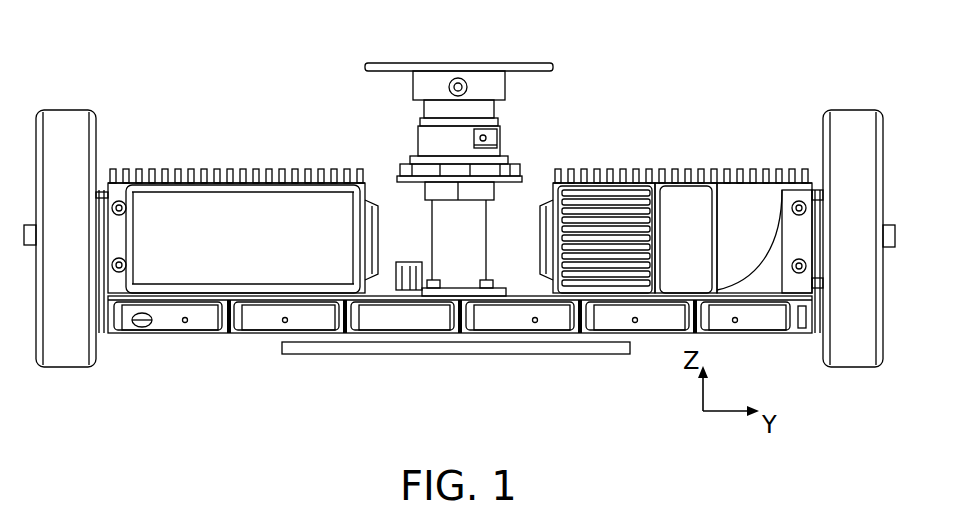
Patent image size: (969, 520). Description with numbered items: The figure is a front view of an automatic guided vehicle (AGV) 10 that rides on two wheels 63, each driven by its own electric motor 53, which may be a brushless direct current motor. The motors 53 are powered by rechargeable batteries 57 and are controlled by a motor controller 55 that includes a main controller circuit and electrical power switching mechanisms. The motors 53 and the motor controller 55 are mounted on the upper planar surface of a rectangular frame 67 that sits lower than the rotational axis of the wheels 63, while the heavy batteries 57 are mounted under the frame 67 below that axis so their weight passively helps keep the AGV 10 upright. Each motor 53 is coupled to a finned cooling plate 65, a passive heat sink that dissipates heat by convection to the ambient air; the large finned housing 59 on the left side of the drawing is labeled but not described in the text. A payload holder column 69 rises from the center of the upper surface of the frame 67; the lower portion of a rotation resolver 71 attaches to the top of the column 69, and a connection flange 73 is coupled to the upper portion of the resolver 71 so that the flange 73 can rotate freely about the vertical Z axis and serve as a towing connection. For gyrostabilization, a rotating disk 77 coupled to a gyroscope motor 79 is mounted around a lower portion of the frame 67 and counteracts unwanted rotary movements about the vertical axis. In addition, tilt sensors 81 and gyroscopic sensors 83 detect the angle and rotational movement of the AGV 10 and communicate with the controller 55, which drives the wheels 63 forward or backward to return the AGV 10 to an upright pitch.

The automatic guided vehicle (AGV) 10 is at (189, 88).
The electric motor 53 is at (750, 205).
The motor controller 55 is at (682, 205).
The rechargeable batteries 57 is at (318, 318).
The control unit housing 59 is at (207, 212).
The wheel 63 is at (78, 150).
The cooling plate 65 is at (603, 170).
The frame 67 is at (528, 298).
The payload holder column 69 is at (442, 236).
The rotation resolver 71 is at (410, 170).
The connection flange 73 is at (493, 88).
The rotating disk 77 is at (285, 356).
The gyroscope motor 79 is at (468, 344).
The tilt sensor 81 is at (399, 298).
The gyroscopic sensor 83 is at (416, 292).